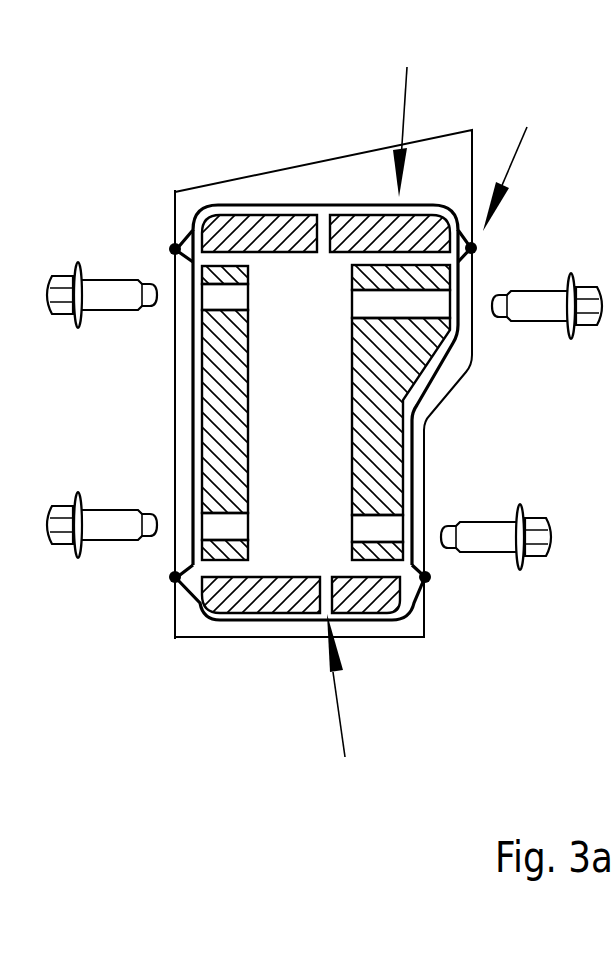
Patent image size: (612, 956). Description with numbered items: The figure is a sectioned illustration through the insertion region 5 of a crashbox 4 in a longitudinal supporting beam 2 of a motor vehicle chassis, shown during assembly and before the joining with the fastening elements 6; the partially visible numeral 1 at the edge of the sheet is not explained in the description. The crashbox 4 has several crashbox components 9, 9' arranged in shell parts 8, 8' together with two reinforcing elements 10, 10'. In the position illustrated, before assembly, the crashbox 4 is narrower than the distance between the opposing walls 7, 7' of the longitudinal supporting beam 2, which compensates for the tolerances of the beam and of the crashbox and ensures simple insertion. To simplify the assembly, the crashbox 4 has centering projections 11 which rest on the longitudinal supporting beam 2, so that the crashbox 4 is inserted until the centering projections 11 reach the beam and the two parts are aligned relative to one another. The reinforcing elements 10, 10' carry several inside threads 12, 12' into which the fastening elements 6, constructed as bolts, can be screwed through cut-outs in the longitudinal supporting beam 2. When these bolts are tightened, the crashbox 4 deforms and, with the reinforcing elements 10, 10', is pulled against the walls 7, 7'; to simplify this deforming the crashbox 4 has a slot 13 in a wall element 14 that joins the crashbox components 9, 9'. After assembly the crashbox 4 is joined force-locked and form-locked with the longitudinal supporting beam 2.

The electromagnet assembly 1 is at (607, 463).
The longitudinal supporting beam 2 is at (472, 165).
The crashbox 4 is at (404, 111).
The insertion region 5 is at (512, 158).
The fastening element 6 is at (100, 292).
The wall 7 is at (479, 380).
The wall 7' is at (117, 414).
The shell part 8 is at (473, 413).
The shell part 8' is at (126, 413).
The crashbox component 9 is at (370, 690).
The crashbox component 9' is at (261, 690).
The reinforcing element 10 is at (452, 390).
The reinforcing element 10' is at (146, 389).
The centering projection 11 is at (175, 243).
The inside thread 12 is at (412, 659).
The inside thread 12' is at (212, 658).
The slot 13 is at (345, 709).
The wall element 14 is at (297, 622).